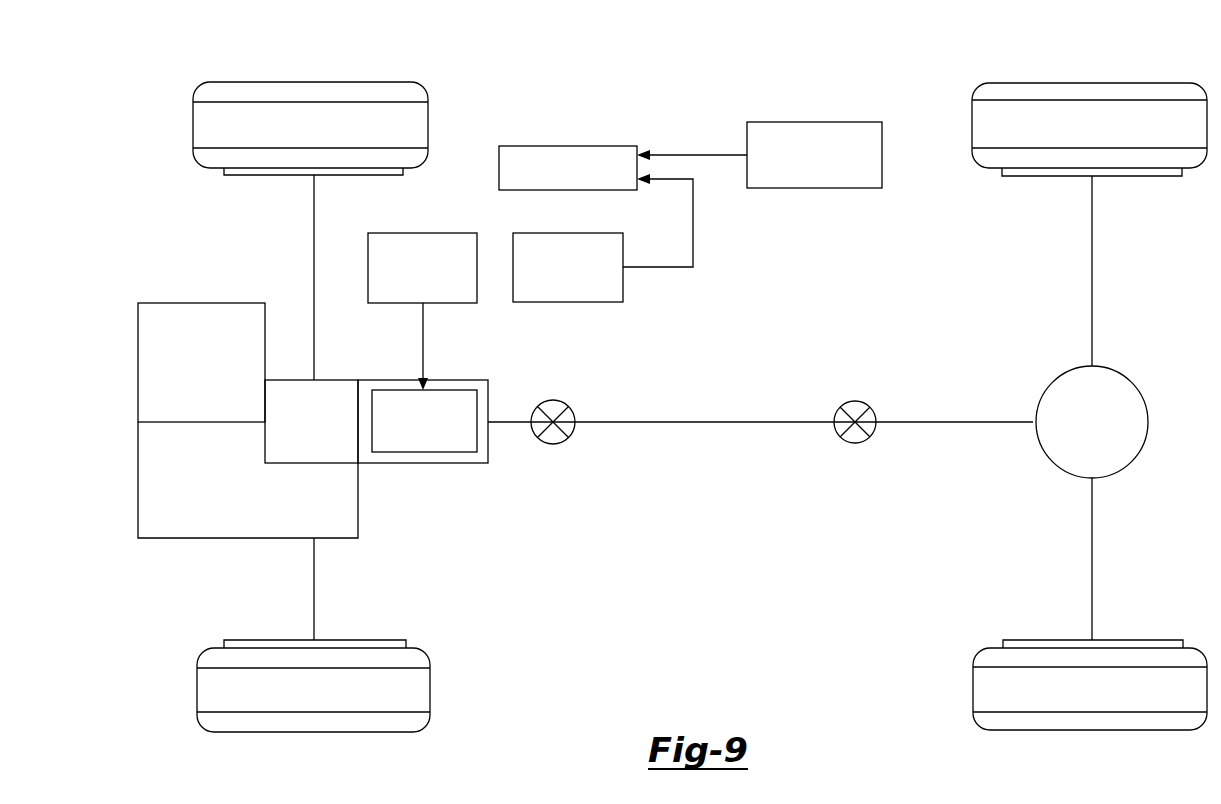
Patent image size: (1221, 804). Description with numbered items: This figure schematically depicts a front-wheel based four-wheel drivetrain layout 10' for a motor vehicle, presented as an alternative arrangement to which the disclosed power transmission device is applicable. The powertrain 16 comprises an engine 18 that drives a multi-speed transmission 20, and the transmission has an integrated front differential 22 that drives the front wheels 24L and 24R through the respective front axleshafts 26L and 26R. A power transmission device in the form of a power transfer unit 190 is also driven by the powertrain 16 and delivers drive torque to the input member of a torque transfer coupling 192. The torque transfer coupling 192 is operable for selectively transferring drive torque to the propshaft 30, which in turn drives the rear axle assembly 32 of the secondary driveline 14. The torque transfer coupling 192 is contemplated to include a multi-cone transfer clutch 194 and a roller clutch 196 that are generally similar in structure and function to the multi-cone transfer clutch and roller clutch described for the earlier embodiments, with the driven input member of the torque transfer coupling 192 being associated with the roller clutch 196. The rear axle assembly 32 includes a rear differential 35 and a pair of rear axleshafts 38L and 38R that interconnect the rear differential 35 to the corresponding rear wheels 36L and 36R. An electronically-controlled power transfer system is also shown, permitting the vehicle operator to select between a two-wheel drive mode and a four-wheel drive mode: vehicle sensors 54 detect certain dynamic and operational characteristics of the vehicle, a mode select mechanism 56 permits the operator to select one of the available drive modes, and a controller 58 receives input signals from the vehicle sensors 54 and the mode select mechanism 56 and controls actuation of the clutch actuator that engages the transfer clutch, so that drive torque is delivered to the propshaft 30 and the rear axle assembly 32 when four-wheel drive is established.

The front-wheel based four-wheel drivetrain layout 10' is at (672, 400).
The secondary driveline 14 is at (760, 454).
The powertrain 16 is at (248, 458).
The engine 18 is at (206, 374).
The multi-speed transmission 20 is at (206, 504).
The front differential 22 is at (322, 432).
The front wheel 24R is at (233, 82).
The front wheel 24L is at (342, 733).
The front axleshaft 26R is at (314, 243).
The front axleshaft 26L is at (318, 586).
The propshaft 30 is at (680, 423).
The rear axle assembly 32 is at (1109, 408).
The rear differential 35 is at (1128, 388).
The rear wheel 36R is at (1037, 83).
The rear wheel 36L is at (1082, 731).
The rear axleshaft 38R is at (1092, 238).
The rear axleshaft 38L is at (1094, 550).
The vehicle sensors 54 is at (623, 290).
The mode select mechanism 56 is at (857, 122).
The controller 58 is at (560, 146).
The power transfer unit 190 is at (433, 463).
The torque transfer coupling 192 is at (464, 421).
The multi-cone transfer clutch 194 is at (477, 447).
The roller clutch 196 is at (423, 233).